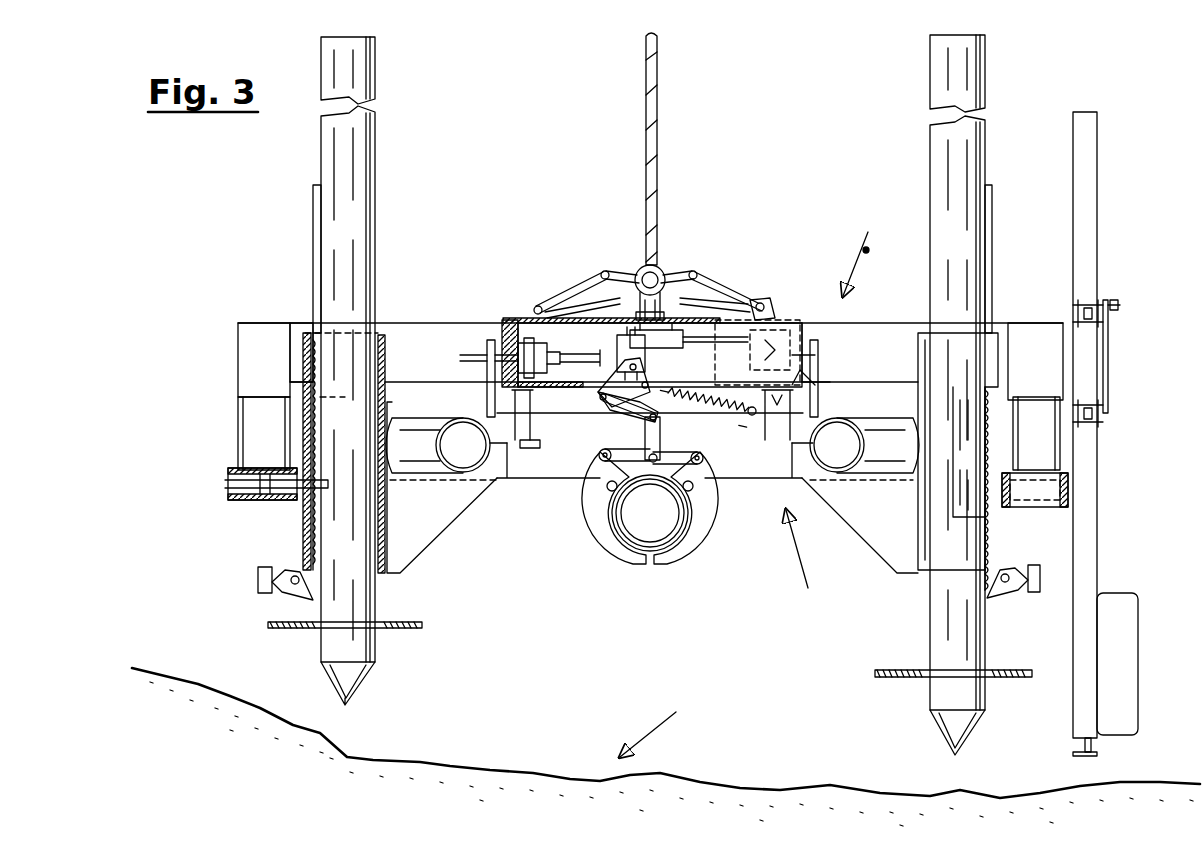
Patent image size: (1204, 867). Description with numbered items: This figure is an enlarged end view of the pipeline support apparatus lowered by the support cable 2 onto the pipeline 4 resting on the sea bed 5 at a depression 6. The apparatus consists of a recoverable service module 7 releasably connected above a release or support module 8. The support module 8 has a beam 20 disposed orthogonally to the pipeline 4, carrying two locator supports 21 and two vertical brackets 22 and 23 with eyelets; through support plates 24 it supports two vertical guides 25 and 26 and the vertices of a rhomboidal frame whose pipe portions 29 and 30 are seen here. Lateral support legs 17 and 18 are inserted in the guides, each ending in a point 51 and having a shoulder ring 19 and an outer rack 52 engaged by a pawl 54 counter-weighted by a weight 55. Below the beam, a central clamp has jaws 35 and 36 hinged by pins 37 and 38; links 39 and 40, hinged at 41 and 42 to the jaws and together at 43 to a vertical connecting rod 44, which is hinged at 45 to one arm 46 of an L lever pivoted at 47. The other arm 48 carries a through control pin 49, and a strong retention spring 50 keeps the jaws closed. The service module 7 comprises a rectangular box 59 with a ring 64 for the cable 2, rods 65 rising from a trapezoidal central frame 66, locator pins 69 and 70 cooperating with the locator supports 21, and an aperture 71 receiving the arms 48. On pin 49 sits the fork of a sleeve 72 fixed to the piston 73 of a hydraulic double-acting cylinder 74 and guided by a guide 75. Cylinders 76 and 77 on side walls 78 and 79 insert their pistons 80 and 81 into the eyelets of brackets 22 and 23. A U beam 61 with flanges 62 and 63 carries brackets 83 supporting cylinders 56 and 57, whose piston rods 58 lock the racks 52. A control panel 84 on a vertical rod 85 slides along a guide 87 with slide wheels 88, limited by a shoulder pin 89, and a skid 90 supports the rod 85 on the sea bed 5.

The support cable 2 is at (651, 128).
The pipeline 4 is at (650, 560).
The sea bed 5 is at (197, 682).
The depression 6 is at (656, 720).
The recoverable service module 7 is at (863, 251).
The release or support module 8 is at (802, 561).
The lateral support leg 17 is at (360, 178).
The lateral support leg 18 is at (940, 190).
The shoulder ring 19 is at (405, 628).
The beam 20 is at (540, 480).
The locator supports 21 is at (528, 405).
The vertical bracket 22 is at (498, 343).
The vertical bracket 23 is at (840, 333).
The support plates 24 is at (430, 548).
The vertical guide 25 is at (390, 345).
The vertical guide 26 is at (975, 330).
The pipe portion 29 is at (860, 440).
The pipe portion 30 is at (450, 455).
The jaw 35 is at (603, 542).
The jaw 36 is at (700, 540).
The pin 37 is at (612, 487).
The pin 38 is at (690, 487).
The link 39 is at (625, 455).
The link 40 is at (680, 455).
The hinge 41 is at (604, 456).
The hinge 42 is at (700, 458).
The common hinge 43 is at (655, 440).
The vertical connecting rod 44 is at (640, 415).
The hinge 45 is at (650, 455).
The arm of L lever 46 is at (610, 412).
The pivot 47 is at (598, 402).
The arm of L lever 48 is at (648, 385).
The through control pin 49 is at (640, 370).
The retention spring 50 is at (718, 400).
The point 51 is at (340, 690).
The rack 52 is at (313, 248).
The pawl 54 is at (285, 595).
The weight 55 is at (258, 580).
The double acting hydraulic cylinder 56 is at (235, 490).
The double acting hydraulic cylinder 57 is at (1050, 505).
The piston rod 58 is at (305, 485).
The rectangular box 59 is at (738, 334).
The U beam 61 is at (408, 340).
The flange 62 is at (270, 340).
The flange 63 is at (1040, 335).
The ring 64 is at (652, 290).
The rods 65 is at (538, 305).
The trapezoidal central frame 66 is at (615, 278).
The locator pin 69 is at (527, 453).
The locator pin 70 is at (812, 385).
The aperture 71 is at (627, 360).
The sleeve 72 is at (600, 345).
The piston 73 is at (530, 345).
The hydraulic double-acting cylinder 74 is at (660, 337).
The guide 75 is at (595, 345).
The hydraulic double acting cylinder 76 is at (515, 348).
The hydraulic double acting cylinder 77 is at (768, 349).
The side wall 78 is at (508, 340).
The side wall 79 is at (795, 335).
The piston 80 is at (487, 358).
The piston 81 is at (820, 355).
The brackets 83 is at (280, 440).
The control panel 84 is at (1135, 660).
The vertical rod 85 is at (1095, 580).
The guide 87 is at (1110, 355).
The slide wheels 88 is at (1080, 305).
The shoulder pin 89 is at (1118, 304).
The skid 90 is at (1093, 755).